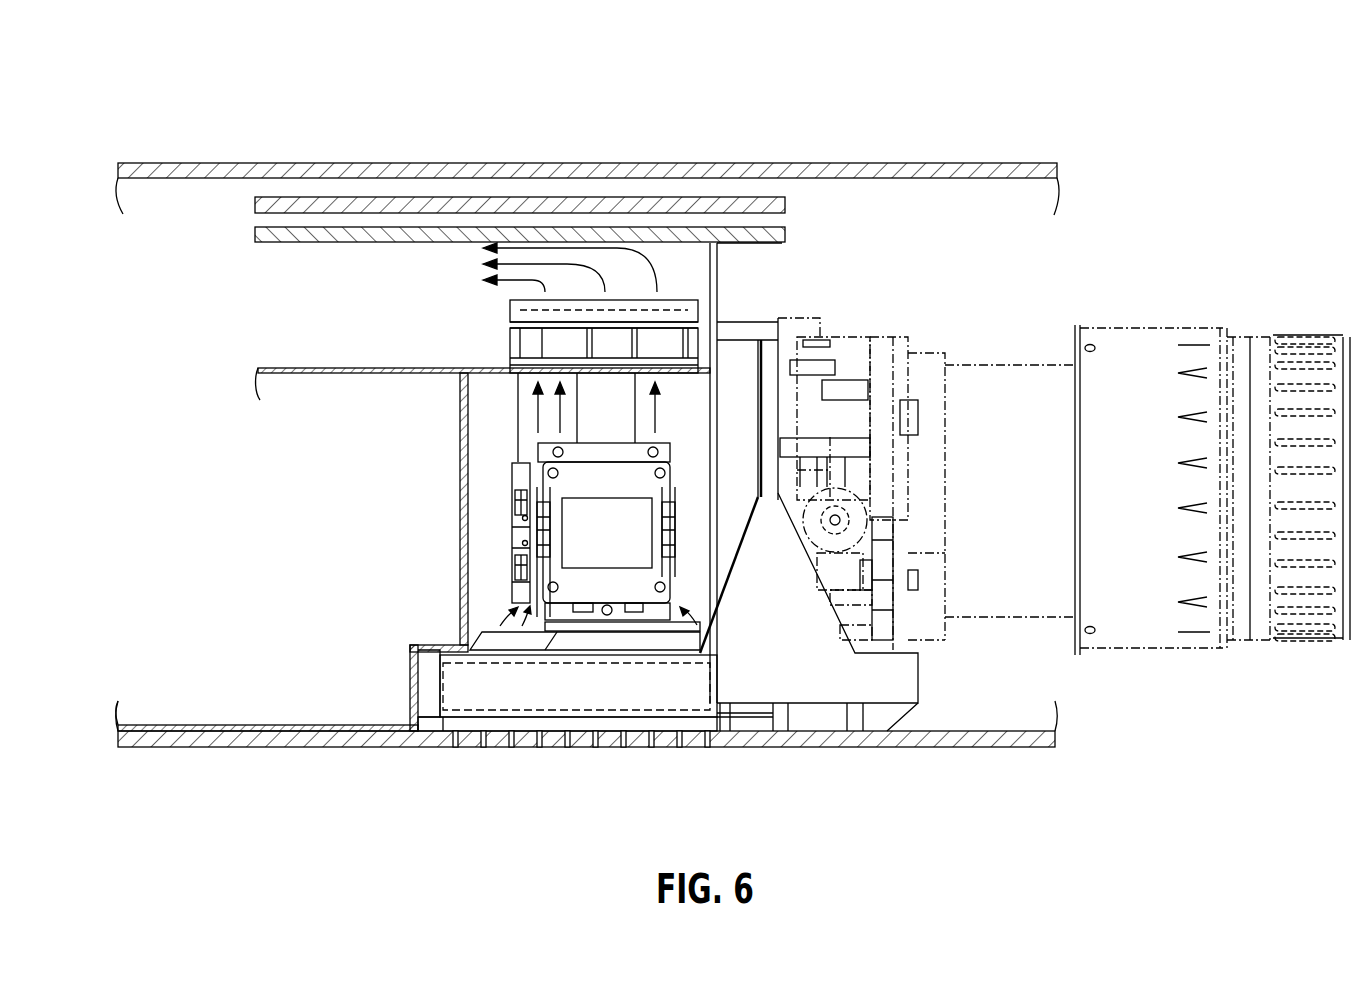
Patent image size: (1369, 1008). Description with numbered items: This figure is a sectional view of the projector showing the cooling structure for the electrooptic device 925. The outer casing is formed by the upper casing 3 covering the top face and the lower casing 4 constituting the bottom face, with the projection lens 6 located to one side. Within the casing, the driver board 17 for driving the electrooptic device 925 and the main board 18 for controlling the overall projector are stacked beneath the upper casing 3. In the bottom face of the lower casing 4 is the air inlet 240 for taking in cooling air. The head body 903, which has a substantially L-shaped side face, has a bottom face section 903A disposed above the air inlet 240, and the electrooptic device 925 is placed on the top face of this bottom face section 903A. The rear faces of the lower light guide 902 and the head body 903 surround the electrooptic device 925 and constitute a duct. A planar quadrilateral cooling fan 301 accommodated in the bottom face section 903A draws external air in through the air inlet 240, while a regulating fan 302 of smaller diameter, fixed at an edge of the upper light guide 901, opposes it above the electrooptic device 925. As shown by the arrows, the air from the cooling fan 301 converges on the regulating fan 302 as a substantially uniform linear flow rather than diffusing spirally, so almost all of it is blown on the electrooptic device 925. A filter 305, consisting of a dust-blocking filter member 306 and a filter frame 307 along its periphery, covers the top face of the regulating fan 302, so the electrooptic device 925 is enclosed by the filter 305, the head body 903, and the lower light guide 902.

The upper casing 3 is at (965, 163).
The lower casing 4 is at (215, 747).
The projection lens 6 is at (1132, 328).
The driver board 17 is at (787, 236).
The main board 18 is at (787, 205).
The air inlet 240 is at (648, 747).
The cooling fan 301 is at (530, 717).
The regulating fan 302 is at (510, 345).
The filter 305 is at (535, 87).
The filter member 306 is at (560, 306).
The filter frame 307 is at (612, 300).
The upper light guide 901 is at (313, 368).
The lower light guide 902 is at (460, 533).
The head body 903 is at (818, 665).
The bottom face section 903A is at (430, 682).
The electrooptic device 925 is at (500, 439).